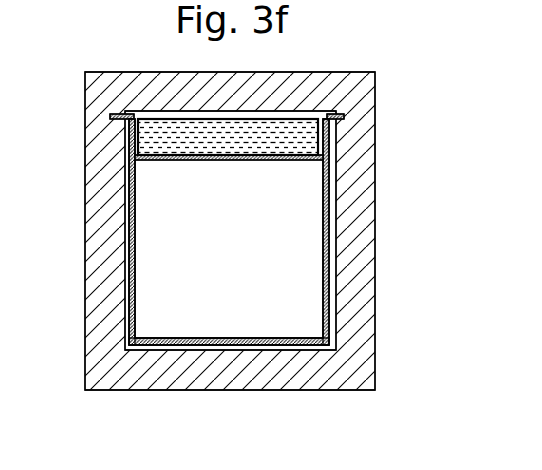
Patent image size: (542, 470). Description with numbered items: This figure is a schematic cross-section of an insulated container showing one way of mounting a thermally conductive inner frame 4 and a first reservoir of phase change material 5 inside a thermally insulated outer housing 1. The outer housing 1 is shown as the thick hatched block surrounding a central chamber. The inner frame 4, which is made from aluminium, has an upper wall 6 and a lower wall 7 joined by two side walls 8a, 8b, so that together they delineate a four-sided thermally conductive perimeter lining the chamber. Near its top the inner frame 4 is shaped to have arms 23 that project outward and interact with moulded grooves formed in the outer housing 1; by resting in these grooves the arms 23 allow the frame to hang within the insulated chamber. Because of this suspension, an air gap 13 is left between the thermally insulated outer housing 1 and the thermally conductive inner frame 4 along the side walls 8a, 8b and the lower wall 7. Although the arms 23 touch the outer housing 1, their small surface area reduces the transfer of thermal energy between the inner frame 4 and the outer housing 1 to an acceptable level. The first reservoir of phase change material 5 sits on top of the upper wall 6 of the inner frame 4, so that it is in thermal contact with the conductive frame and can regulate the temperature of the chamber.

The thermally insulated outer housing 1 is at (355, 331).
The thermally conductive inner frame 4 is at (337, 210).
The first reservoir of phase change material 5 is at (286, 110).
The upper wall 6 is at (177, 161).
The lower wall 7 is at (173, 337).
The side wall 8a is at (132, 283).
The side wall 8b is at (328, 282).
The air gap 13 is at (131, 232).
The arms 23 is at (114, 119).